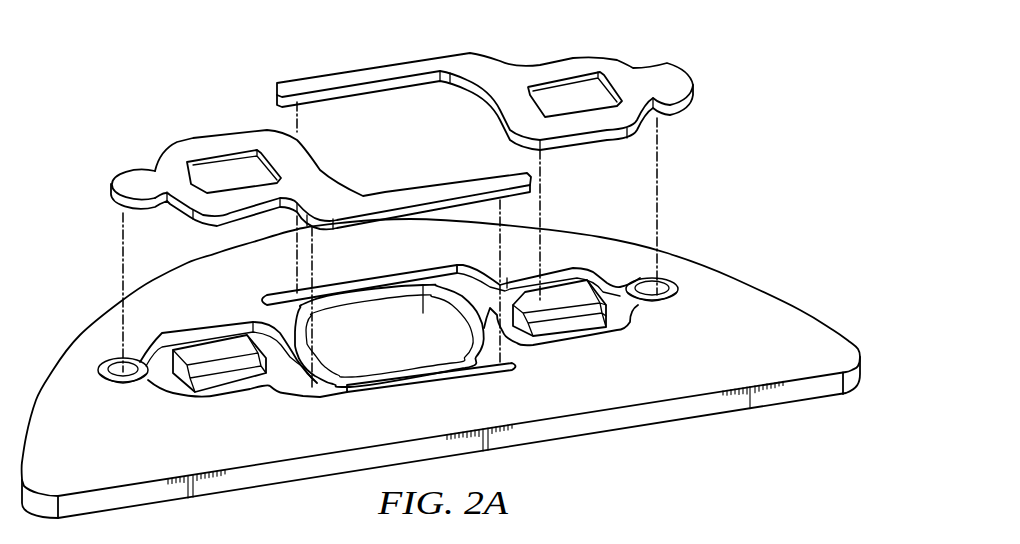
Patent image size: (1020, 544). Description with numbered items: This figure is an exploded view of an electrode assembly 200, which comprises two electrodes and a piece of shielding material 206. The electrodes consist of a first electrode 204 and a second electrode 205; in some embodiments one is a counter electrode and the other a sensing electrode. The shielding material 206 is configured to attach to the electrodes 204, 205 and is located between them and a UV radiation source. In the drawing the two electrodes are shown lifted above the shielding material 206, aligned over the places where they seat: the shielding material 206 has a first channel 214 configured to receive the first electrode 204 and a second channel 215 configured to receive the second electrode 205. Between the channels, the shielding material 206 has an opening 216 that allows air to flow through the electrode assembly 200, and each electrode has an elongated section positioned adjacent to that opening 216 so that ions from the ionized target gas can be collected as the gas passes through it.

The electrode assembly 200 is at (301, 39).
The first electrode 204 is at (187, 140).
The second electrode 205 is at (672, 62).
The shielding material 206 is at (613, 417).
The first channel 214 is at (216, 403).
The second channel 215 is at (615, 343).
The opening 216 is at (410, 313).